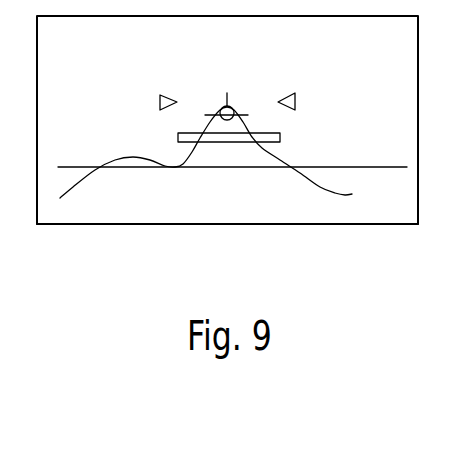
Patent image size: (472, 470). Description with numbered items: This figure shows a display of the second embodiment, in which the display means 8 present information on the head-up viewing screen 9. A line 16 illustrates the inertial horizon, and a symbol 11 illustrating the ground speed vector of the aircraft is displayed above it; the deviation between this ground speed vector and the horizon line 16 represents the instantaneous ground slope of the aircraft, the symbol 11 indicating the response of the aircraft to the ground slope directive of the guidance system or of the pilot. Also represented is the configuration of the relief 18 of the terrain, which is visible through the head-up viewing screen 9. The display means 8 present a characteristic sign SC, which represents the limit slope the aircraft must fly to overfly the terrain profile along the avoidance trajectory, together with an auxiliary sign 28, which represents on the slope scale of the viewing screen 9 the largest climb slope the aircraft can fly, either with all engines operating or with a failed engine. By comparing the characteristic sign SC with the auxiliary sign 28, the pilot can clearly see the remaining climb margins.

The display means 8 is at (110, 248).
The viewing screen 9 is at (345, 224).
The symbol illustrating the ground speed vector 11 is at (223, 108).
The line illustrating the inertial horizon 16 is at (350, 167).
The relief of the terrain 18 is at (72, 186).
The auxiliary sign 28 is at (136, 102).
The characteristic sign SC is at (280, 137).